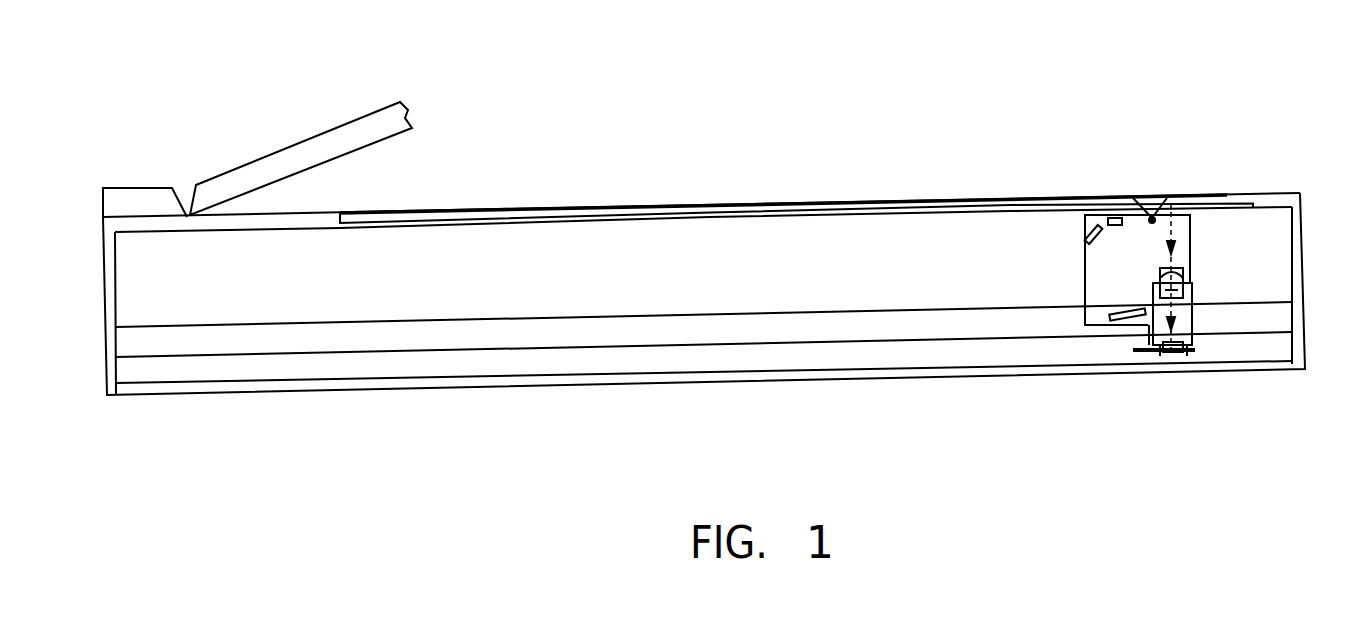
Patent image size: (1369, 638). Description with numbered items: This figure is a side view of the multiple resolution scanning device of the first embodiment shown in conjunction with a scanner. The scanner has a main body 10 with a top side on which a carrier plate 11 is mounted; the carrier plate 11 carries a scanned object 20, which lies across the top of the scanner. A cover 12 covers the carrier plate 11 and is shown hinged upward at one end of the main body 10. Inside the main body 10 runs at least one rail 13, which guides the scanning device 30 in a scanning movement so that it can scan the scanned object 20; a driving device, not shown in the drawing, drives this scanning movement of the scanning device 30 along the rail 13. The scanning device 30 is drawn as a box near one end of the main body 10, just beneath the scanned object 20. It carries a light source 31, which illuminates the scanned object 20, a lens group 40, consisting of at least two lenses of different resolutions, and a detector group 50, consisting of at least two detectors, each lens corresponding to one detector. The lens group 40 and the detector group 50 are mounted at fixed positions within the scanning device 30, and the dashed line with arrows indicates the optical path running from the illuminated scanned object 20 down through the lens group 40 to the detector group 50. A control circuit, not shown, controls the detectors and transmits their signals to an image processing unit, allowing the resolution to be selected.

The main body 10 is at (290, 385).
The carrier plate 11 is at (612, 205).
The cover 12 is at (283, 152).
The rail 13 is at (702, 348).
The scanned object 20 is at (842, 202).
The scanning device 30 is at (1083, 272).
The light source 31 is at (1152, 218).
The lens group 40 is at (1205, 276).
The detector group 50 is at (1203, 345).